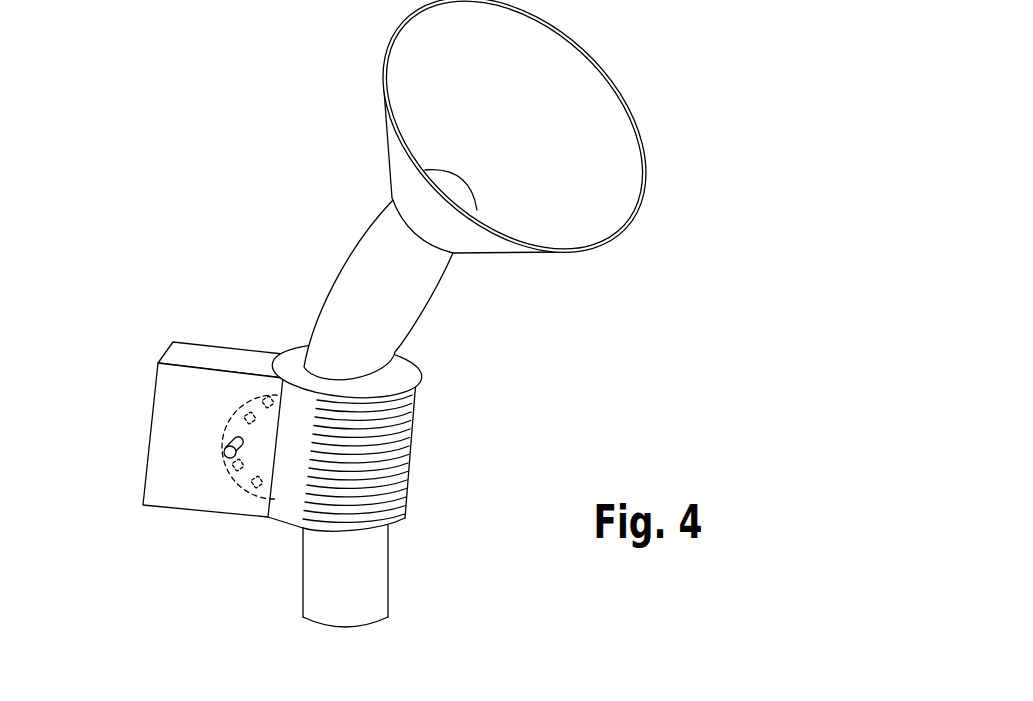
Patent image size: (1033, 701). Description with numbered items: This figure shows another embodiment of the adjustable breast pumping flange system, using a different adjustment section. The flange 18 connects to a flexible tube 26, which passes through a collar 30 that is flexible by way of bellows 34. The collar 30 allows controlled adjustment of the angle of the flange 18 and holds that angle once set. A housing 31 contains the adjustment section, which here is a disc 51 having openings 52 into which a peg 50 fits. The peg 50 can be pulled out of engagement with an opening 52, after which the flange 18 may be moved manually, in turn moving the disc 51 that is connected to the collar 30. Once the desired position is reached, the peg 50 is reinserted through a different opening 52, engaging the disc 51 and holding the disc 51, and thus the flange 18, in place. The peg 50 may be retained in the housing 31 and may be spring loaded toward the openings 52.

The flange 18 is at (648, 176).
The tube 26 is at (432, 277).
The collar 30 is at (385, 508).
The housing 31 is at (158, 455).
The bellows 34 is at (413, 441).
The peg 50 is at (226, 455).
The disc 51 is at (237, 415).
The openings 52 is at (262, 398).